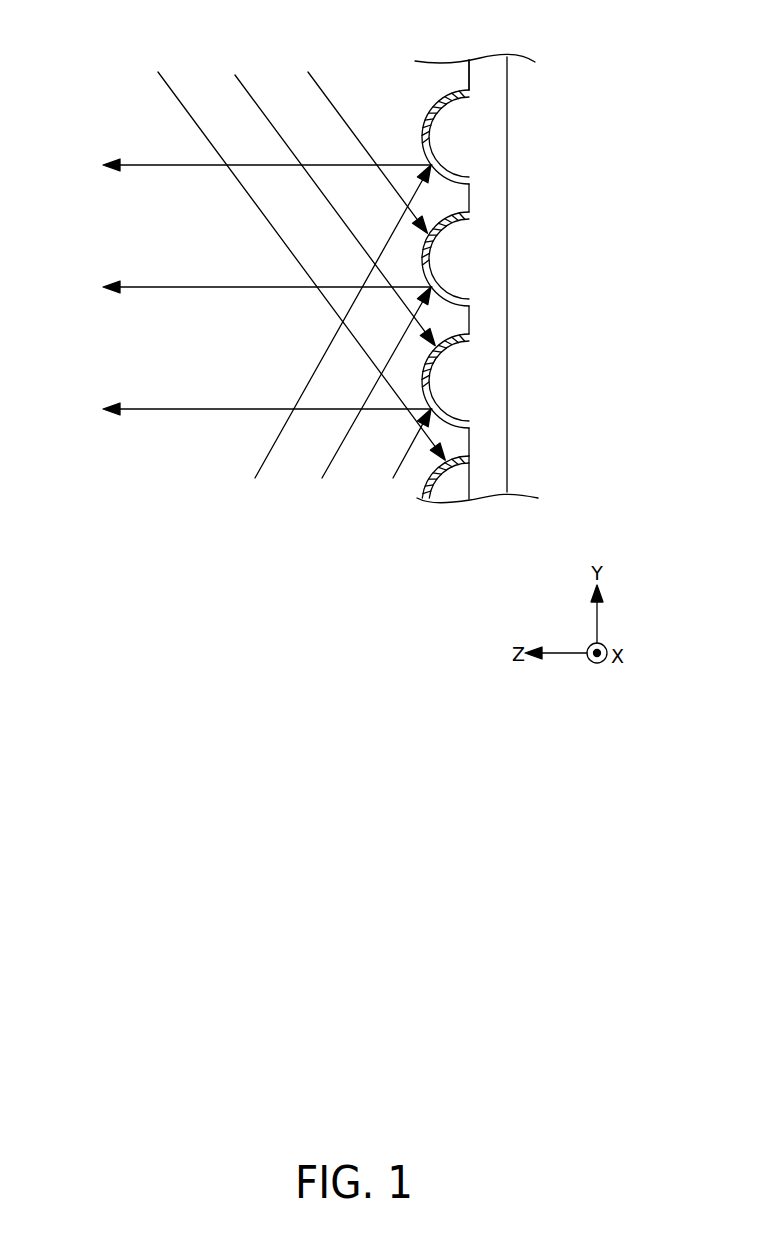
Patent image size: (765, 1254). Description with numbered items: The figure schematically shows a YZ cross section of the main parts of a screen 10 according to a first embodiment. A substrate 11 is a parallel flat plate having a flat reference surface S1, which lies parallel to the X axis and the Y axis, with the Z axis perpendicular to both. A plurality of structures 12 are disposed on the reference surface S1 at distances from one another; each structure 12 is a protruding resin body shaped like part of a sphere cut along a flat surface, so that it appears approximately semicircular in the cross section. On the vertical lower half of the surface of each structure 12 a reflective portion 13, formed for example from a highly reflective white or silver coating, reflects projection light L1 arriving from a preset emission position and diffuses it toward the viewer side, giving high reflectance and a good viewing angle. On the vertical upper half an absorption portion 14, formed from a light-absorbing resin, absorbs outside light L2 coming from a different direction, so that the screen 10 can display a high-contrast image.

The screen 10 is at (566, 92).
The substrate 11 is at (495, 451).
The structure 12 is at (455, 250).
The reflective portion 13 is at (469, 319).
The absorption portion 14 is at (469, 193).
The reference surface S1 is at (469, 78).
The projection light L1 is at (242, 488).
The outside light L2 is at (318, 69).